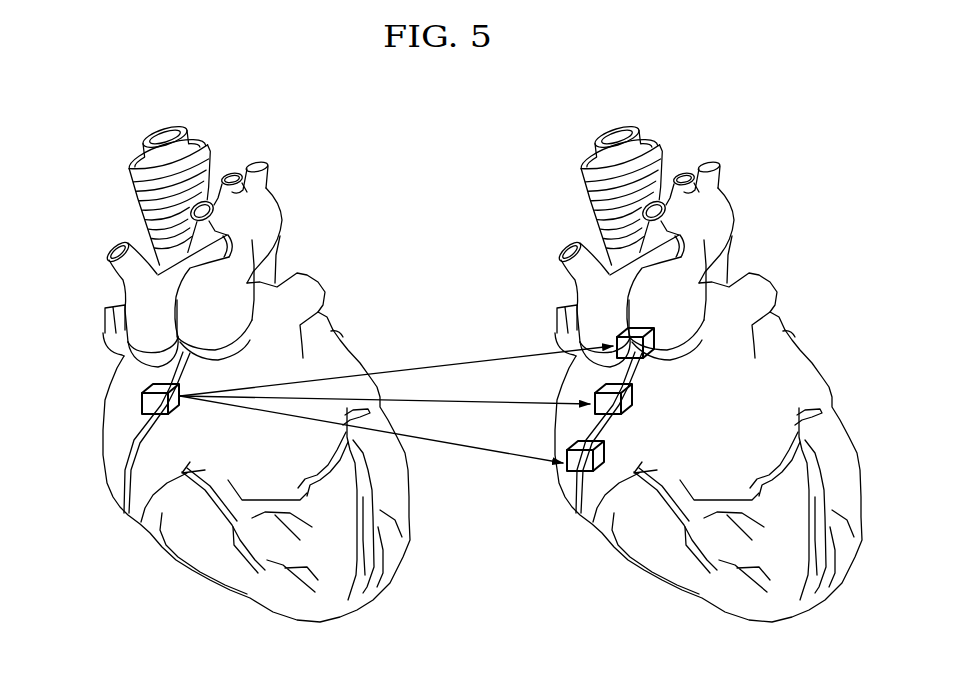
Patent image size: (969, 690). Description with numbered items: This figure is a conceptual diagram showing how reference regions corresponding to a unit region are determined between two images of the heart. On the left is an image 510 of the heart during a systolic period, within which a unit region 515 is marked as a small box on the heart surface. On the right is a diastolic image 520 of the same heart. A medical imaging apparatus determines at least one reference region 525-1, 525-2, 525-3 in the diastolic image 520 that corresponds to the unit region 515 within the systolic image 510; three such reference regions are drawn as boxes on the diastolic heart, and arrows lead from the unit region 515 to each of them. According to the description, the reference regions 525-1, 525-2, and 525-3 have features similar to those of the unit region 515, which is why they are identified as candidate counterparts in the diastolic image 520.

The image of the heart during a systolic period 510 is at (343, 618).
The diastolic image 520 is at (795, 618).
The unit region 515 is at (142, 401).
The reference region 525-1 is at (648, 337).
The reference region 525-2 is at (635, 389).
The reference region 525-3 is at (606, 442).